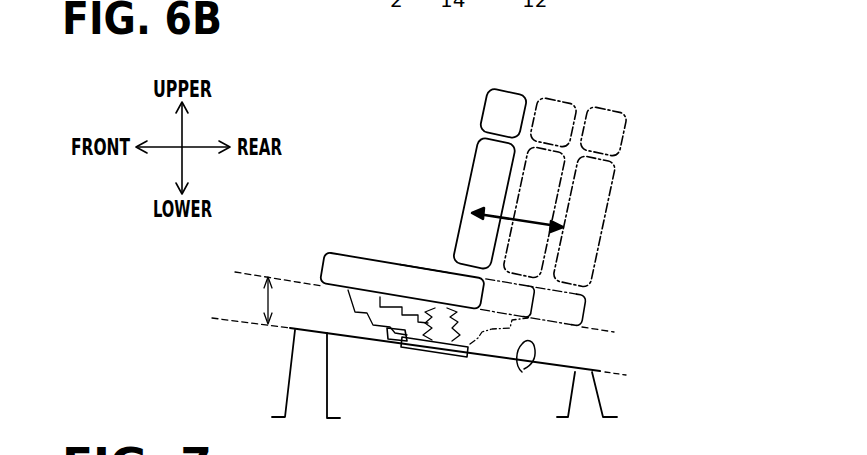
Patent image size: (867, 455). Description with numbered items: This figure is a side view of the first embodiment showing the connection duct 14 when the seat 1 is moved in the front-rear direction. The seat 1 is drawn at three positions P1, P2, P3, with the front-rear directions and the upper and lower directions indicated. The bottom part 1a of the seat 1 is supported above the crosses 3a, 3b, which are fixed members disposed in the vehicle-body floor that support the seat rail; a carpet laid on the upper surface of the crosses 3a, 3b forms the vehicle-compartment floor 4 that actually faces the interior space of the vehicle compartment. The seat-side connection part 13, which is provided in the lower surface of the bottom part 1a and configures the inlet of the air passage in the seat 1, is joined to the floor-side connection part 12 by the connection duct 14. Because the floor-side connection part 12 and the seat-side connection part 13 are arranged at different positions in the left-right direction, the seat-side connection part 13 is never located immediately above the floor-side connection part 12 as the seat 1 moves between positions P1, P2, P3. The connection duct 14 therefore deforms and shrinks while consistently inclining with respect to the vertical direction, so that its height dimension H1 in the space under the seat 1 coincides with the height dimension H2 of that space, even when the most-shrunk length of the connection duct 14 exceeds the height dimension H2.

The seat 1 is at (487, 153).
The bottom part 1a is at (425, 269).
The position P1 is at (473, 166).
The position P2 is at (539, 176).
The position P3 is at (589, 184).
The seat-side connection part 13 is at (363, 290).
The connection duct 14 is at (393, 342).
The floor-side connection part 12 is at (433, 356).
The vehicle-compartment floor 4 is at (522, 372).
The cross 3a is at (331, 373).
The cross 3b is at (604, 398).
The height dimension H1 is at (264, 297).
The height dimension H2 is at (240, 306).